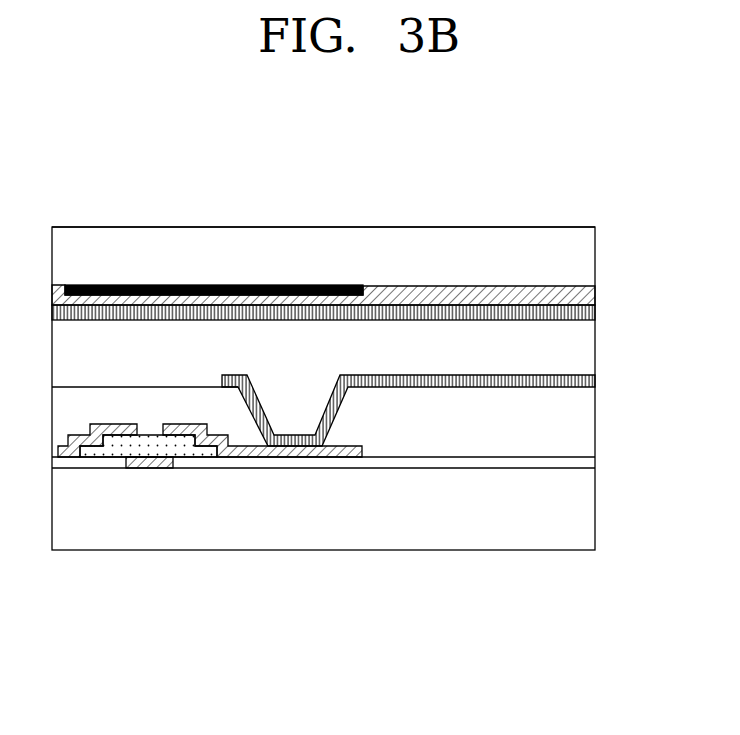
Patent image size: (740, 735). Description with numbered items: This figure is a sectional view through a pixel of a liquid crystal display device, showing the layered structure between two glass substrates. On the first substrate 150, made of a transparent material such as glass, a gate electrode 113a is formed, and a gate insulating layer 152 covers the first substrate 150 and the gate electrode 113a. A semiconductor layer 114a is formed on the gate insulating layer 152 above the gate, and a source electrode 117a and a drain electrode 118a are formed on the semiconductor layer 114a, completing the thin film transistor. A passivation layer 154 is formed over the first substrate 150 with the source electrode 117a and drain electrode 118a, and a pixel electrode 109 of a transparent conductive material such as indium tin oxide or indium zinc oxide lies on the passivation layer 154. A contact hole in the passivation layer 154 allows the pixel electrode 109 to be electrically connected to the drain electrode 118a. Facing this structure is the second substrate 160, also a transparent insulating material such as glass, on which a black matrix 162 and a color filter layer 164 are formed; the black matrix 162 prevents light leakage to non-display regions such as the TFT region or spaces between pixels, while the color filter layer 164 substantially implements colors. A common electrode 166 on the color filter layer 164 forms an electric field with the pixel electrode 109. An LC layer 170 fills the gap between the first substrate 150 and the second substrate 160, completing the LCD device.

The pixel electrode 109 is at (485, 387).
The gate electrode 113a is at (152, 468).
The semiconductor layer 114a is at (203, 450).
The source electrode 117a is at (70, 457).
The drain electrode 118a is at (340, 457).
The first substrate 150 is at (580, 514).
The gate insulating layer 152 is at (580, 463).
The passivation layer 154 is at (580, 423).
The second substrate 160 is at (580, 263).
The black matrix 162 is at (183, 285).
The color filter layer 164 is at (466, 295).
The common electrode 166 is at (585, 312).
The LC layer 170 is at (580, 349).